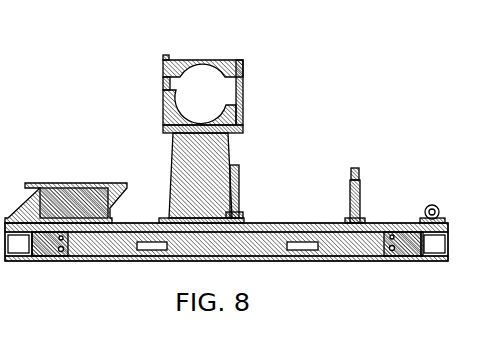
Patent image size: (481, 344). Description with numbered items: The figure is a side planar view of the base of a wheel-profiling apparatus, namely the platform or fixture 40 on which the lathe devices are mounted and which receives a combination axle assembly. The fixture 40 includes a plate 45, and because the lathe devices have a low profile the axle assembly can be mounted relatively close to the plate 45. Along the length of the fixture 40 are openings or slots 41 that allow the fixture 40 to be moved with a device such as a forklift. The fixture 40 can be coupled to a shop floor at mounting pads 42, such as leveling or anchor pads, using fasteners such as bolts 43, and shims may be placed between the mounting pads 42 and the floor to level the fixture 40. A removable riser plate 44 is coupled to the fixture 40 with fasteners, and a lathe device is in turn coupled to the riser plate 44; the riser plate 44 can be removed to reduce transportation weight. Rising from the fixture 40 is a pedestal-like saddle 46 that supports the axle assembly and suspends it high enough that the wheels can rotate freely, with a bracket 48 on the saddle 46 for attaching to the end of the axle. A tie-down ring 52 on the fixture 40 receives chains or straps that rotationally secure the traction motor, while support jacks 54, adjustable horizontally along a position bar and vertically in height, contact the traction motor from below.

The fixture 40 is at (334, 50).
The slots 41 is at (146, 258).
The mounting pads 42 is at (62, 260).
The bolts 43 is at (54, 260).
The riser plate 44 is at (74, 184).
The plate 45 is at (145, 224).
The saddle 46 is at (165, 117).
The bracket 48 is at (222, 60).
The tie-down ring 52 is at (434, 206).
The support jack 54 is at (240, 196).